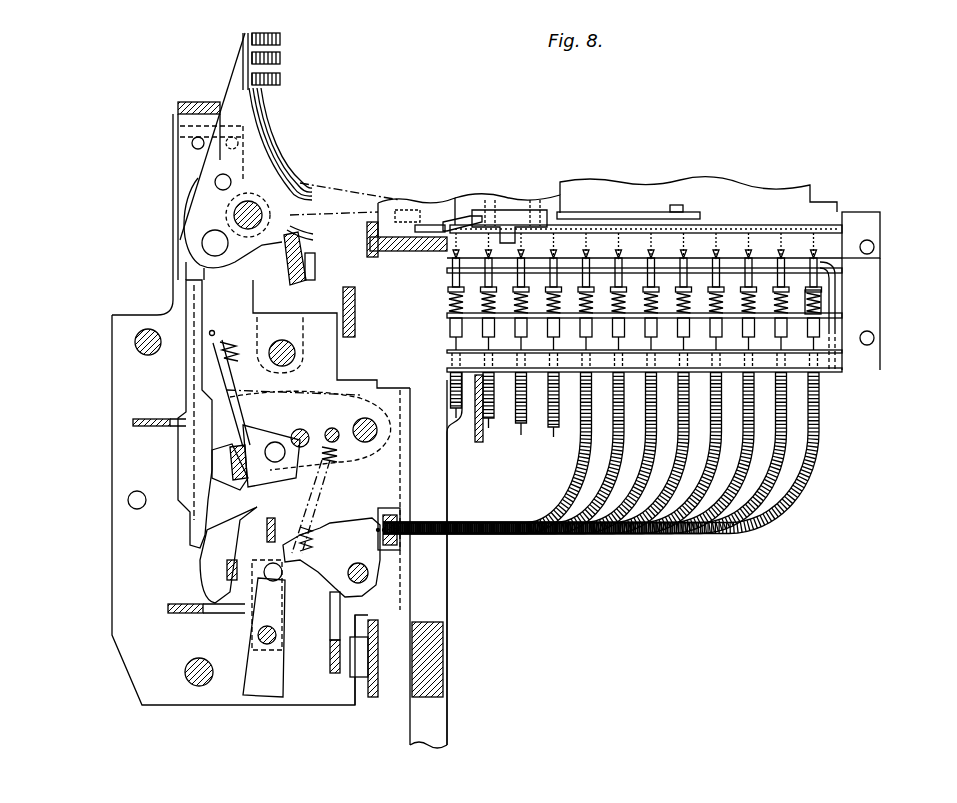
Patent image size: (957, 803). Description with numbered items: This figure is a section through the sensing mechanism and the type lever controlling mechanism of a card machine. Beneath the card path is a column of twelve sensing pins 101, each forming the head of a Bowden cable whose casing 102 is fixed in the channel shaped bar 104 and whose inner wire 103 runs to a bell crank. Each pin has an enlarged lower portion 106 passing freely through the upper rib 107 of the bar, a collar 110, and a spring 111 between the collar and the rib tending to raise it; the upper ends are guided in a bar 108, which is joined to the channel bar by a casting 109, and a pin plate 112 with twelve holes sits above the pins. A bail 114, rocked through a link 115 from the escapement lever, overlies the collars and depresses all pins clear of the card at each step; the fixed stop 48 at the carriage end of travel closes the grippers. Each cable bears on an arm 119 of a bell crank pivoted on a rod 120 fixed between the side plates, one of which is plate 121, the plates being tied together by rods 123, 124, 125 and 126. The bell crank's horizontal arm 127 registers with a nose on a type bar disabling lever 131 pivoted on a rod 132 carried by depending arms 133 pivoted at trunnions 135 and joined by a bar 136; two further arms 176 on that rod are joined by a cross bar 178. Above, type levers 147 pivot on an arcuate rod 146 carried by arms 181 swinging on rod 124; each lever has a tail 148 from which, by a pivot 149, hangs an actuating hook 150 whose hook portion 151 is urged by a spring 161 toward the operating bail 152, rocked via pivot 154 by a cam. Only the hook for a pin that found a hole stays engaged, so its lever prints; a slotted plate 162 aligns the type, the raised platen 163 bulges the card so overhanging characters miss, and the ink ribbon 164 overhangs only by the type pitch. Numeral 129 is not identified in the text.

The fixed stop 48 is at (640, 210).
The sensing pins 101 is at (718, 270).
The casing 102 is at (440, 528).
The inner wire 103 is at (817, 347).
The channel shaped bar 104 is at (838, 354).
The enlarged lower portion 106 is at (810, 332).
The upper rib 107 is at (820, 307).
The bar 108 is at (795, 252).
The casting 109 is at (870, 222).
The collar 110 is at (528, 285).
The spring 111 is at (502, 293).
The pin plate 112 is at (768, 223).
The bail 114 is at (573, 277).
The link 115 is at (478, 442).
The arm of bell crank 119 is at (398, 520).
The rod 120 is at (368, 573).
The side plate 121 is at (112, 562).
The rod 123 is at (135, 341).
The rod 124 is at (284, 353).
The rod 125 is at (195, 684).
The rod 126 is at (378, 427).
The horizontal arm 127 is at (298, 585).
The spring 129 is at (335, 460).
The type bar disabling lever 131 is at (253, 505).
The rod 132 is at (266, 645).
The depending arm 133 is at (253, 625).
The trunnion 135 is at (280, 575).
The bar 136 is at (227, 570).
The rod 146 is at (247, 213).
The type lever 147 is at (265, 167).
The tail 148 is at (178, 240).
The pivot 149 is at (213, 243).
The actuating hook 150 is at (195, 392).
The hook portion 151 is at (237, 442).
The operating bail 152 is at (228, 462).
The pivot 154 is at (276, 442).
The spring 161 is at (232, 350).
The plate 162 is at (452, 223).
The platen 163 is at (432, 222).
The ink ribbon 164 is at (378, 247).
The arm 176 is at (265, 535).
The cross bar 178 is at (265, 518).
The arm 181 is at (267, 268).